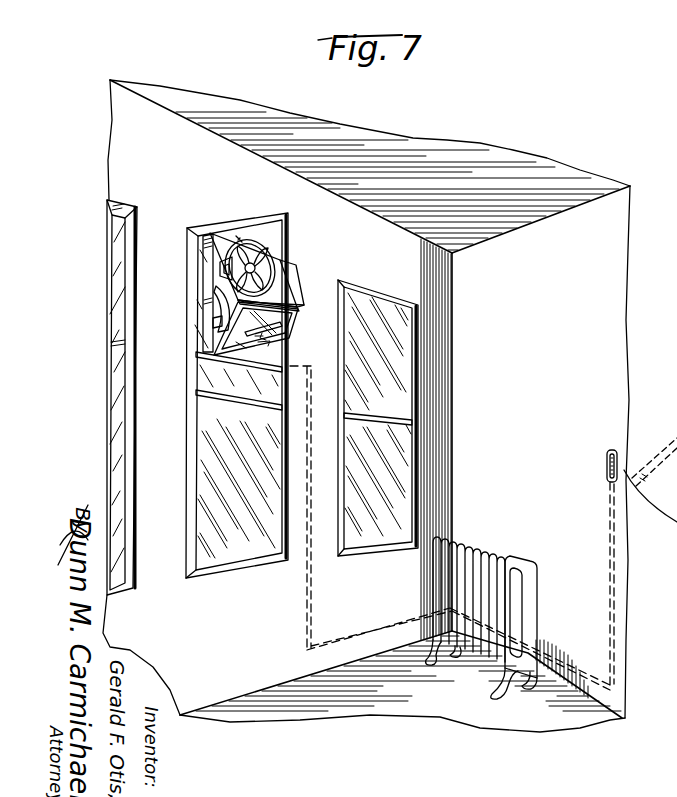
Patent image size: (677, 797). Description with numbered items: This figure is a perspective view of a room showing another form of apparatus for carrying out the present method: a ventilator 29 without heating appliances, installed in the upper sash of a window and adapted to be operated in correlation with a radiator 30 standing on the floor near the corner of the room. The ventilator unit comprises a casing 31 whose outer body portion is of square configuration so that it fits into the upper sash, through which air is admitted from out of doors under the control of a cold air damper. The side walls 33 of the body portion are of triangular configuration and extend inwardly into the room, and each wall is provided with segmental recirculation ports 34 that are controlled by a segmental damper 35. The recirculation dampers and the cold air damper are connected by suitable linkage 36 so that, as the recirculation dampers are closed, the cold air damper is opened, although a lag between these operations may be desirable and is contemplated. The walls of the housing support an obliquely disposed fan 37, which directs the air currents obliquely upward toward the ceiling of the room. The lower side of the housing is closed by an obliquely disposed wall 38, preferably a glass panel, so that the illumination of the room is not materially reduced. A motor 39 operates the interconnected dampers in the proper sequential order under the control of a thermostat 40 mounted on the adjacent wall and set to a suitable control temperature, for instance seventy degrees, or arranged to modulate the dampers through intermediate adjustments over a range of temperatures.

The ventilator 29 is at (269, 264).
The radiator 30 is at (472, 540).
The casing 31 is at (298, 311).
The side walls 33 is at (216, 256).
The segmental recirculation ports 34 is at (224, 270).
The segmental damper 35 is at (238, 240).
The linkage 36 is at (250, 333).
The fan 37 is at (252, 266).
The obliquely disposed wall 38 is at (270, 344).
The motor 39 is at (240, 365).
The thermostat 40 is at (605, 456).